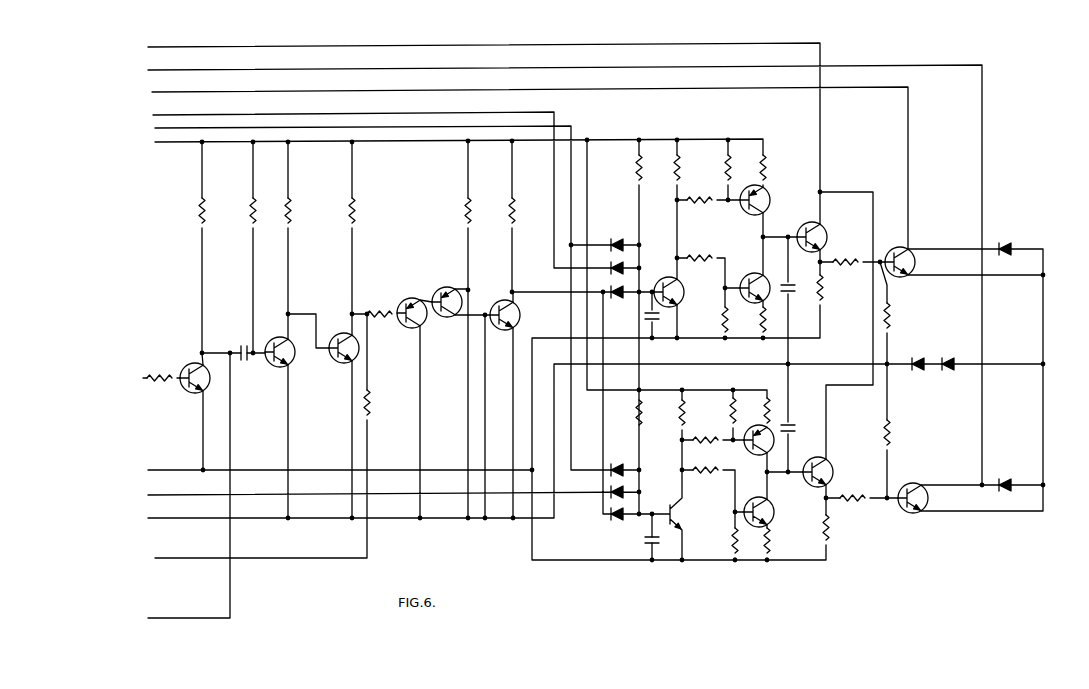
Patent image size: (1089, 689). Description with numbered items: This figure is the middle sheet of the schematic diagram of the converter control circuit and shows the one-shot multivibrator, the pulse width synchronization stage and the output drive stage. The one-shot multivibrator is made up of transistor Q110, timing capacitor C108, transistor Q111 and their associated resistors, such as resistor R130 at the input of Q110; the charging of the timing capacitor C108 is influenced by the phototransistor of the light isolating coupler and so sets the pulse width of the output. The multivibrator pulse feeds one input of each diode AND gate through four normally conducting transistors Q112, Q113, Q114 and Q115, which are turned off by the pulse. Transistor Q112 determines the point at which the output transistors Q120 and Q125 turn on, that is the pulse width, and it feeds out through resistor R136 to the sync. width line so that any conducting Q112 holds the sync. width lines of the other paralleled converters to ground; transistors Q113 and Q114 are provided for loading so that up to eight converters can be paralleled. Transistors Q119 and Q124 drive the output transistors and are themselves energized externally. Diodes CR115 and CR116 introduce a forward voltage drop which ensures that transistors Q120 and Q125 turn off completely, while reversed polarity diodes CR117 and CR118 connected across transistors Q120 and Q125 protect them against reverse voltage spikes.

The resistor R130 is at (163, 369).
The transistor Q110 is at (184, 387).
The timing capacitor C108 is at (242, 344).
The transistor Q111 is at (270, 360).
The transistor Q112 is at (334, 356).
The transistor Q113 is at (397, 318).
The transistor Q114 is at (441, 295).
The transistor Q115 is at (524, 315).
The resistor R136 is at (386, 402).
The transistor Q119 is at (803, 229).
The output transistor Q120 is at (919, 262).
The reversed polarity diode CR117 is at (1010, 241).
The diode CR116 is at (950, 355).
The diode CR115 is at (917, 372).
The transistor Q124 is at (835, 469).
The output transistor Q125 is at (916, 507).
The reversed polarity diode CR118 is at (1009, 479).